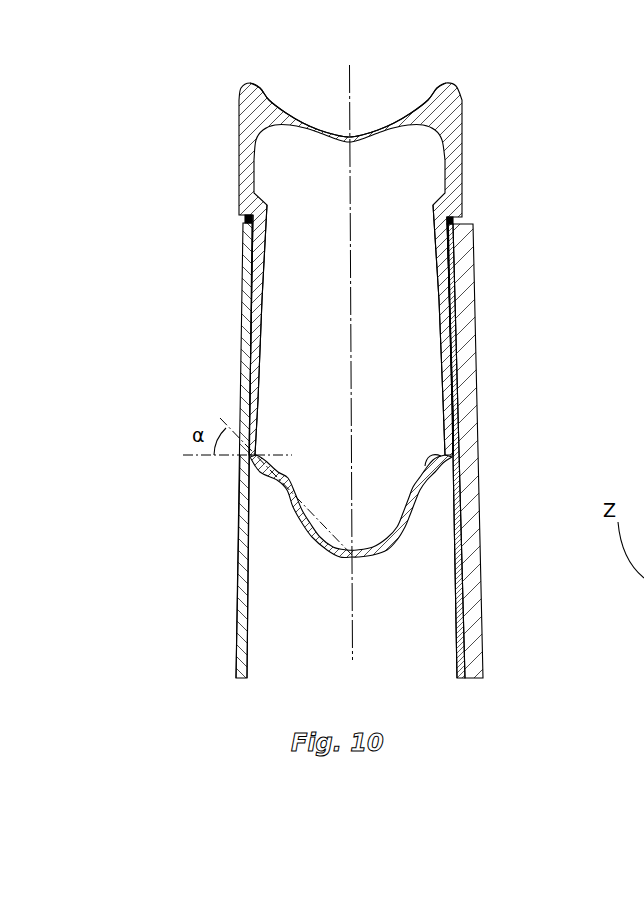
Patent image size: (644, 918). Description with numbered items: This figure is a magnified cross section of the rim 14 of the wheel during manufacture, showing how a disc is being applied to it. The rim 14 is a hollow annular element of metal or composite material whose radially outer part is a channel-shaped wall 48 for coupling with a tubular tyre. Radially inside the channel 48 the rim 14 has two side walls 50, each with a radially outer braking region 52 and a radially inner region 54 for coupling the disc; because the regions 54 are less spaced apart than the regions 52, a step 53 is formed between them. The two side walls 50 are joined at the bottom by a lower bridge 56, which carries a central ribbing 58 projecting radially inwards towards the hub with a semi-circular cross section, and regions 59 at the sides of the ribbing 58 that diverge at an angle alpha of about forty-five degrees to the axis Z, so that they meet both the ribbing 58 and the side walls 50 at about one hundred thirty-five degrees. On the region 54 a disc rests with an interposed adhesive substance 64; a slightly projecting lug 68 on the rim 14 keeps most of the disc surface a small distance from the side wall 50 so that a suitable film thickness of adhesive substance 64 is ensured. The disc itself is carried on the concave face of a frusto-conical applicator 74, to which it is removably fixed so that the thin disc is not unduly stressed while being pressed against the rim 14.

The rim 14 is at (512, 193).
The channel-shaped wall 48 is at (303, 95).
The side wall 50 is at (208, 150).
The braking region 52 is at (239, 172).
The step 53 is at (246, 217).
The radially inner region 54 is at (249, 256).
The lower bridge 56 is at (263, 511).
The central ribbing 58 is at (313, 543).
The diverging region 59 is at (420, 478).
The adhesive substance 64 is at (459, 390).
The lug 68 is at (449, 344).
The applicator 74 is at (462, 306).